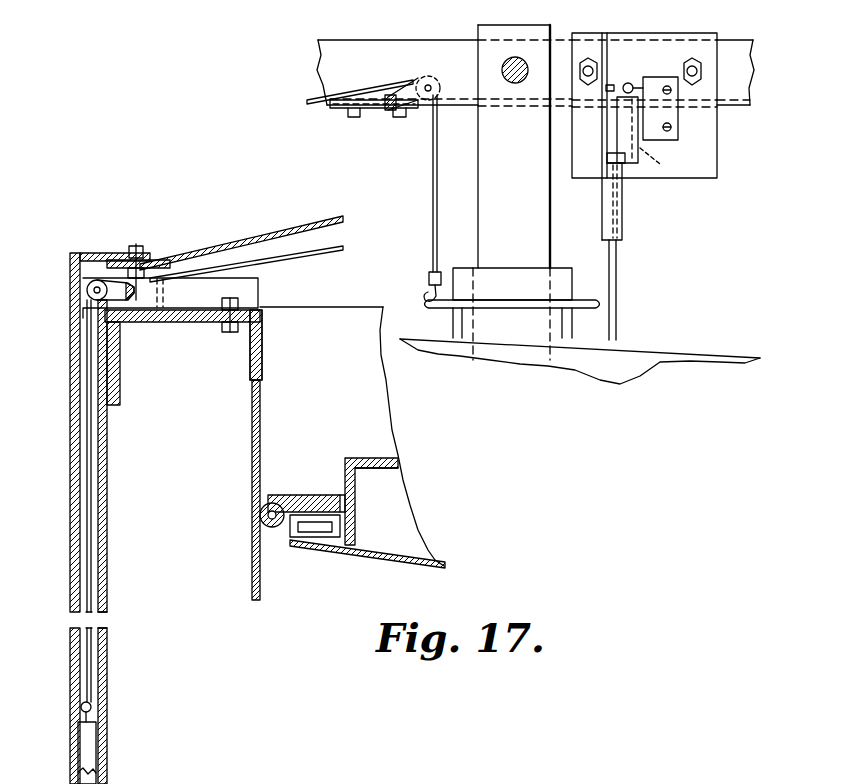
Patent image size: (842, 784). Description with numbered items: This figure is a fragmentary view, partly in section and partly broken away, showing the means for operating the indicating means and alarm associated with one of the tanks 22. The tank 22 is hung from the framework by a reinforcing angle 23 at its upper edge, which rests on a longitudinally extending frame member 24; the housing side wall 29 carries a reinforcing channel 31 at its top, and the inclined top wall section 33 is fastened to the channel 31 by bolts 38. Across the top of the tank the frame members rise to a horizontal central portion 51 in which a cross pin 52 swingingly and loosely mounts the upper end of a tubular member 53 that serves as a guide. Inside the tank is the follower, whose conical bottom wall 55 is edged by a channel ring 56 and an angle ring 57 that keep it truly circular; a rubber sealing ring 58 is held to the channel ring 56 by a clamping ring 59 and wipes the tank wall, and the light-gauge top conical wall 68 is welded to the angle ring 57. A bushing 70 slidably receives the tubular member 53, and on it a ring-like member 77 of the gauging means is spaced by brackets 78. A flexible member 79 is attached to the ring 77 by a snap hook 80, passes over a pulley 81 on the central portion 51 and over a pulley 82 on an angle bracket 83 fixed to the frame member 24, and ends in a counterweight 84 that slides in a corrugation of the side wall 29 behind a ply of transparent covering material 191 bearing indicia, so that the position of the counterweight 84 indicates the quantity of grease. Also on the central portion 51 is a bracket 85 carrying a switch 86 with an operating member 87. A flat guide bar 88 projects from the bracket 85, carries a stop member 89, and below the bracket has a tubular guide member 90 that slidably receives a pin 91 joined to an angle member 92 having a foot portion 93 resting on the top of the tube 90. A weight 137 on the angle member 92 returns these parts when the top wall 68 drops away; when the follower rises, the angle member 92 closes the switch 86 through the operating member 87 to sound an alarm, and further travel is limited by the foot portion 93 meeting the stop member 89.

The tank 22 is at (252, 424).
The reinforcing angle 23 is at (249, 348).
The longitudinally extending frame member 24 is at (150, 324).
The side wall member 29 is at (108, 504).
The reinforcing channel 31 is at (148, 262).
The top wall section 33 is at (262, 236).
The bolt 38 is at (138, 246).
The horizontal central portion 51 is at (456, 44).
The cross pin 52 is at (524, 60).
The tubular member 53 is at (483, 201).
The bottom wall 55 is at (386, 564).
The channel ring 56 is at (306, 540).
The ring angular in cross section 57 is at (372, 458).
The sealing ring 58 is at (276, 504).
The clamping ring 59 is at (312, 494).
The top conical wall 68 is at (645, 350).
The bushing 70 is at (556, 272).
The ring-like member 77 is at (590, 298).
The bracket 78 is at (452, 322).
The flexible member 79 is at (300, 250).
The snap hook 80 is at (438, 275).
The pulley 81 is at (430, 78).
The pulley 82 is at (86, 292).
The angle bracket 83 is at (188, 300).
The counterweight 84 is at (78, 760).
The bracket 85 is at (717, 158).
The switch 86 is at (663, 134).
The operating member 87 is at (632, 82).
The flat guide bar 88 is at (609, 156).
The stop member 89 is at (611, 84).
The tubular guide member 90 is at (624, 202).
The pin 91 is at (617, 312).
The angle member 92 is at (660, 162).
The foot portion 93 is at (604, 180).
The weight 137 is at (622, 133).
The transparent covering material 191 is at (70, 492).